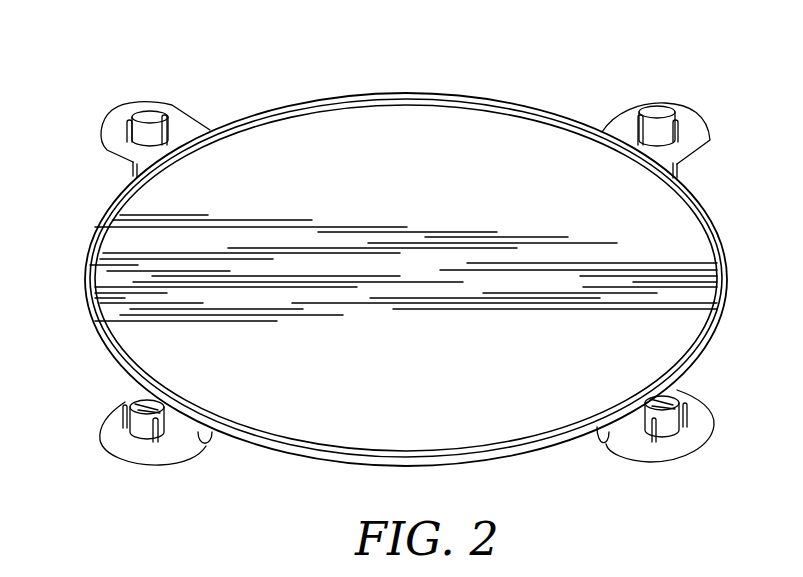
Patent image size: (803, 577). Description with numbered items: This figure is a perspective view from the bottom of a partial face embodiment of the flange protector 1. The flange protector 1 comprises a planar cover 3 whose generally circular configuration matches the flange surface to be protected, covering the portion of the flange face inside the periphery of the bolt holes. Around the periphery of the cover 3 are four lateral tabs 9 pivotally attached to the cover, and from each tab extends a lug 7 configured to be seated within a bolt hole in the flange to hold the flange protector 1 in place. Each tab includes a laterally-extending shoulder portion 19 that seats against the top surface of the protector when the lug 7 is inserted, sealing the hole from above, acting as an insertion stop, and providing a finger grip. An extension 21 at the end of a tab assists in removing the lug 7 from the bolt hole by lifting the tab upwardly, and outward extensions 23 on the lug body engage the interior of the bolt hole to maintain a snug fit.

The flange protector 1 is at (341, 90).
The planar cover 3 is at (120, 243).
The lug 7 is at (667, 400).
The lateral tab 9 is at (682, 146).
The shoulder portion 19 is at (615, 130).
The extension 21 is at (113, 437).
The outward extension 23 is at (123, 133).